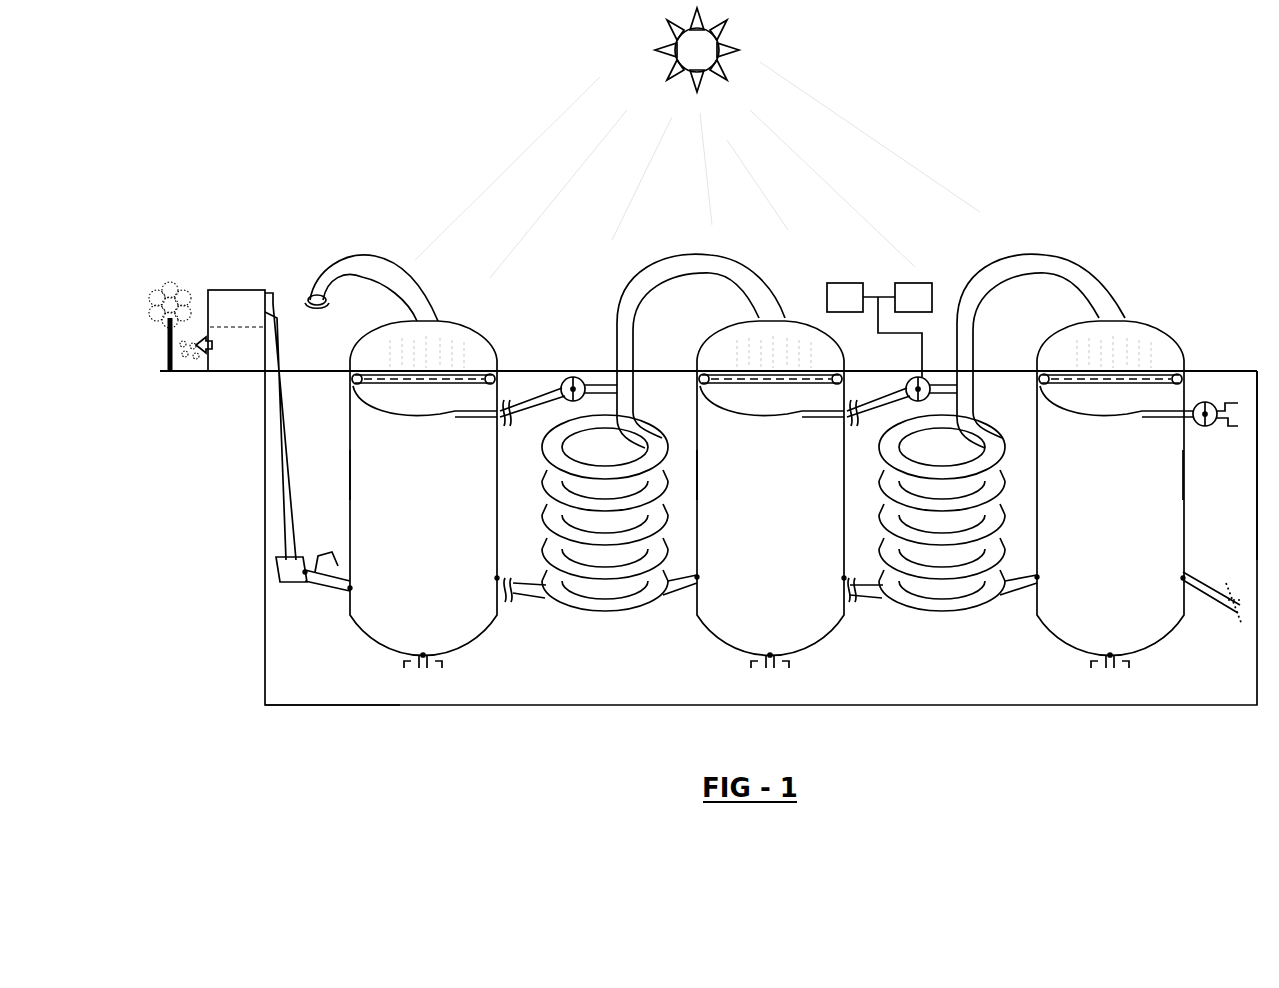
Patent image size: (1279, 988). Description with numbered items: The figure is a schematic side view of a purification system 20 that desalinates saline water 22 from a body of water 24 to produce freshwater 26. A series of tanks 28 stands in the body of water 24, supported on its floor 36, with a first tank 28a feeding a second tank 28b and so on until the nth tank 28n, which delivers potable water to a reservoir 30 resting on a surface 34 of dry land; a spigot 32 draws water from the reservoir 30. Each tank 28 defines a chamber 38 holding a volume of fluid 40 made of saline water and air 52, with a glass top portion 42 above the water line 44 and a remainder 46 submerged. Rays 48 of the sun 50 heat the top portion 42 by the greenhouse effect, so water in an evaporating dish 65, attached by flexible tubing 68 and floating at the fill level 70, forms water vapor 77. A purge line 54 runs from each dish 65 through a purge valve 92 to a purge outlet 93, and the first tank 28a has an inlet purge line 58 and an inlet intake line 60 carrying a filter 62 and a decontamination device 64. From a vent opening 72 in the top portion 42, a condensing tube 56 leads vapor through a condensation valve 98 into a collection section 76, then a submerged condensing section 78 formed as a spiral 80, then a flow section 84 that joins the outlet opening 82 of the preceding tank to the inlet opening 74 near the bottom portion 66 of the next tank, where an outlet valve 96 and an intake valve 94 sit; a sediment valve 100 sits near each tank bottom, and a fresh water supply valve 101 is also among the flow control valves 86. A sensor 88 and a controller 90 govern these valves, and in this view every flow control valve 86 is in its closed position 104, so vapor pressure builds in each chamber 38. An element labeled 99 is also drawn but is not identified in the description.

The purification system 20 is at (305, 152).
The saline water 22 is at (835, 618).
The body of water 24 is at (1197, 372).
The freshwater 26 is at (226, 357).
The tanks 28 is at (352, 442).
The nth tank 28n is at (352, 538).
The second tank 28b is at (850, 510).
The first tank 28a is at (1185, 485).
The reservoir 30 is at (222, 325).
The spigot 32 is at (207, 376).
The surface 34 is at (165, 365).
The floor 36 is at (322, 703).
The chamber 38 is at (350, 492).
The volume of fluid 40 is at (463, 368).
The top portion 42 is at (365, 352).
The water line 44 is at (1225, 368).
The remainder 46 is at (845, 555).
The rays 48 is at (510, 158).
The sun 50 is at (690, 46).
The air 52 is at (420, 345).
The purge line 54 is at (460, 412).
The condensing tube 56 is at (590, 593).
The inlet purge line 58 is at (1148, 425).
The inlet intake line 60 is at (1195, 600).
The filter 62 is at (1233, 605).
The decontamination device 64 is at (1232, 590).
The evaporating dish 65 is at (417, 400).
The bottom portion 66 is at (462, 622).
The flexible tubing 68 is at (508, 432).
The fill level 70 is at (487, 371).
The vent opening 72 is at (425, 300).
The inlet opening 74 is at (490, 582).
The collection section 76 is at (375, 256).
The water vapor 77 is at (385, 345).
The condensing section 78 is at (603, 557).
The spiral 80 is at (572, 602).
The outlet opening 82 is at (356, 585).
The flow section 84 is at (528, 605).
The flow control valves 86 is at (312, 296).
The sensor 88 is at (835, 307).
The controller 90 is at (903, 307).
The purge valve 92 is at (565, 378).
The purge outlet 93 is at (612, 388).
The intake valve 94 is at (493, 575).
The outlet valve 96 is at (347, 592).
The condensation valve 98 is at (312, 290).
The feed pipe 99 is at (268, 480).
The sediment valve 100 is at (418, 668).
The fresh water supply valve 101 is at (290, 590).
The closed position 104 is at (306, 300).